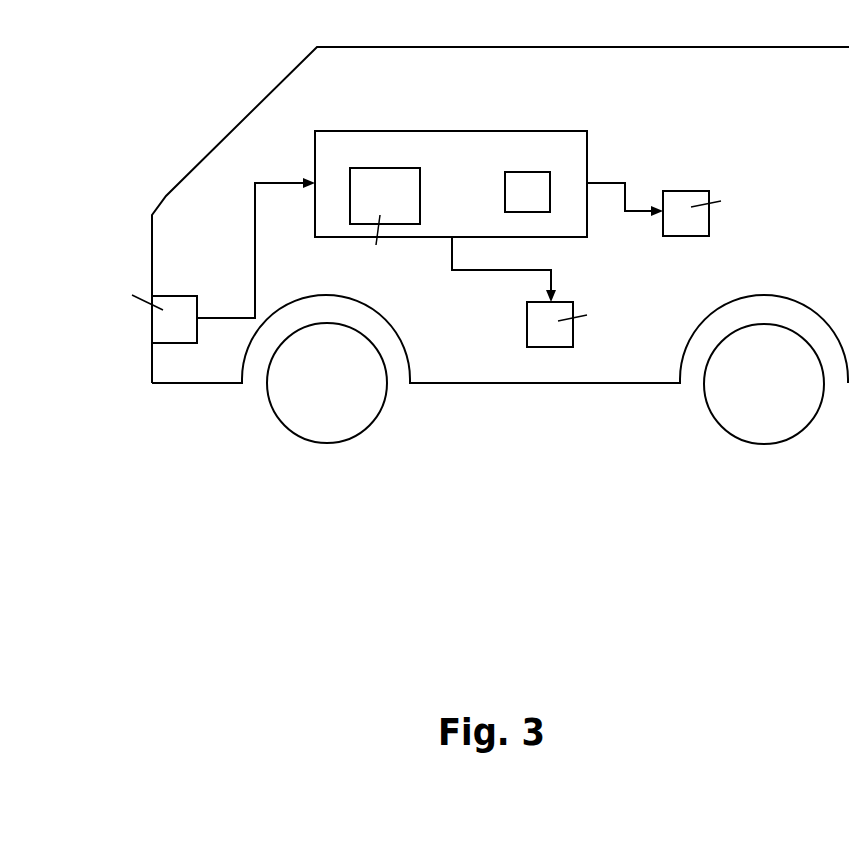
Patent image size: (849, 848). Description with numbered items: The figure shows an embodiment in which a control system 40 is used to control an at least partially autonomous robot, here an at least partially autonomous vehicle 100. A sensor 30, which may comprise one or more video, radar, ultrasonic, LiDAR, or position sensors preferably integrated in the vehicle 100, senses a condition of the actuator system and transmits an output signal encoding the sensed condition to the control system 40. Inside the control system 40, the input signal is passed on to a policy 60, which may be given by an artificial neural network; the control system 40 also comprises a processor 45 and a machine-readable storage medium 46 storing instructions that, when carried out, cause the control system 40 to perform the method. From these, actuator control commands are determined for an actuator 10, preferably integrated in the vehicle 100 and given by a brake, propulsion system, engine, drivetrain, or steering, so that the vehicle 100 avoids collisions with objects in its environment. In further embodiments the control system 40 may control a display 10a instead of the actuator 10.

The at least partially autonomous vehicle 100 is at (160, 195).
The control system 40 is at (410, 131).
The processor 45 is at (330, 156).
The machine-readable storage medium 46 is at (350, 168).
The policy 60 is at (530, 170).
The display 10a is at (686, 172).
The actuator 10 is at (545, 347).
The sensor 30 is at (158, 324).